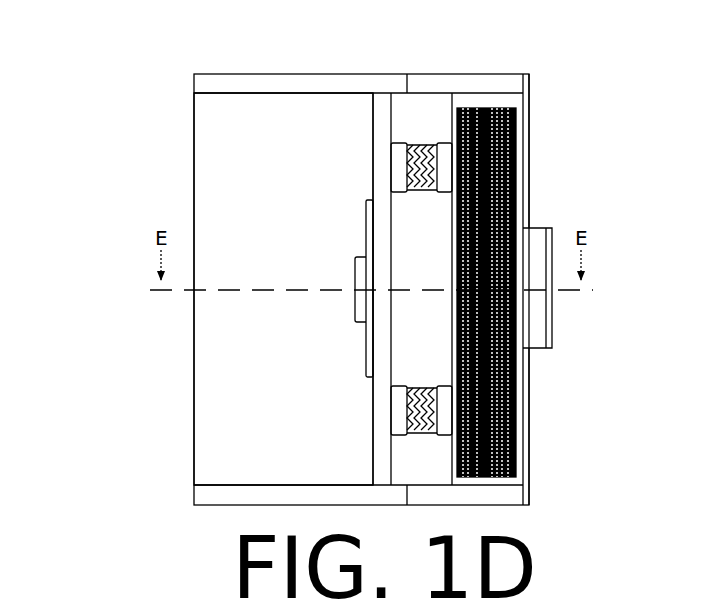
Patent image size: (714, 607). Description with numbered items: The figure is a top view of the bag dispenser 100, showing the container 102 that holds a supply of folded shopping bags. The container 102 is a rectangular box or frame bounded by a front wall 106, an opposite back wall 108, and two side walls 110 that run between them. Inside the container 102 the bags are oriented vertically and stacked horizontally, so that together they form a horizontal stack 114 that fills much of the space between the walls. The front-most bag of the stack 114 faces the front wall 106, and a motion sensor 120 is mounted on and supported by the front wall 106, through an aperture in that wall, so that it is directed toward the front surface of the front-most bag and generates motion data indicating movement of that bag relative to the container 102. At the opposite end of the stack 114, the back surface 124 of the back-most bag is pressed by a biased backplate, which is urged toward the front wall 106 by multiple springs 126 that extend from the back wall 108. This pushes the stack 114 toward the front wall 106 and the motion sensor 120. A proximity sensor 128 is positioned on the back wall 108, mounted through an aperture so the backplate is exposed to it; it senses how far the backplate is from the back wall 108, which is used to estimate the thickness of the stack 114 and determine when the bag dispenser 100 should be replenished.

The bag dispenser 100 is at (112, 34).
The container 102 is at (194, 150).
The front wall 106 is at (525, 443).
The back wall 108 is at (385, 130).
The side walls 110 is at (200, 80).
The horizontal stack 114 is at (513, 148).
The motion sensor 120 is at (536, 325).
The back surface 124 is at (452, 217).
The springs 126 is at (420, 165).
The proximity sensor 128 is at (360, 277).